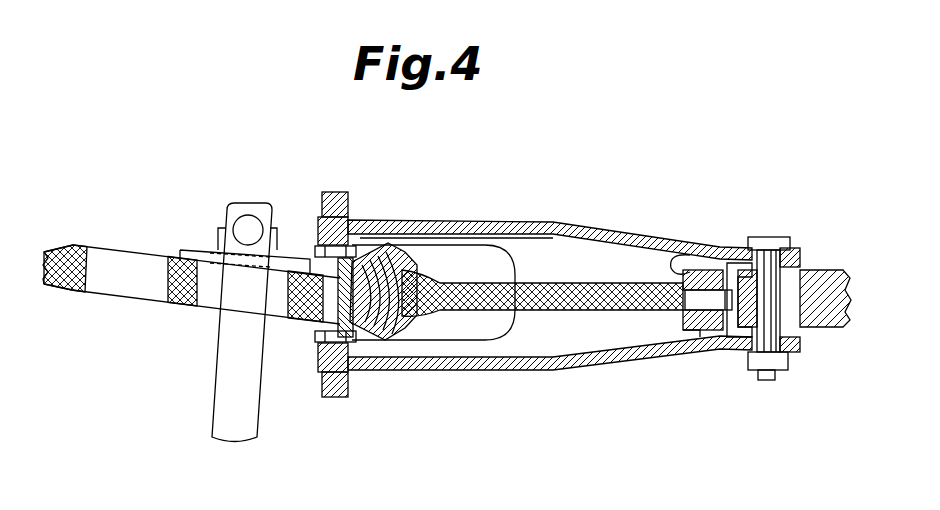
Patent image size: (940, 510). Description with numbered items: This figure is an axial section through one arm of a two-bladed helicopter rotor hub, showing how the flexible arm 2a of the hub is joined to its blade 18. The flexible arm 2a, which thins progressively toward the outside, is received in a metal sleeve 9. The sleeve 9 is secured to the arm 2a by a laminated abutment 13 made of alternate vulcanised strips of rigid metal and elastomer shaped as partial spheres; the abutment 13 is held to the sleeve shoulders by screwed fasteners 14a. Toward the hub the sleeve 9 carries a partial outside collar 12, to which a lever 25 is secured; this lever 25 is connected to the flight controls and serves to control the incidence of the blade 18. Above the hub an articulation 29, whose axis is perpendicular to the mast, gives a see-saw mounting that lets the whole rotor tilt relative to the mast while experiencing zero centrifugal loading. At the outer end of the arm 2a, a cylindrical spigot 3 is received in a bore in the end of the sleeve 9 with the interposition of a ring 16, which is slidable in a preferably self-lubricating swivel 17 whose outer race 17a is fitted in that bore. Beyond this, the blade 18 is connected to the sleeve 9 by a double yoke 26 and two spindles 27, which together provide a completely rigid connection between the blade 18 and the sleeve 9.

The articulation 29 is at (250, 222).
The lever 25 is at (328, 192).
The partial outside collar 12 is at (350, 203).
The screwed fasteners 14a is at (313, 330).
The abutment 13 is at (368, 250).
The metal sleeve 9 is at (605, 232).
The flexible arm 2a is at (602, 303).
The ring 16 is at (675, 257).
The spigot 3 is at (710, 303).
The swivel 17 is at (697, 347).
The outer race 17a is at (717, 248).
The spindles 27 is at (775, 296).
The double yoke 26 is at (738, 350).
The blade 18 is at (820, 317).